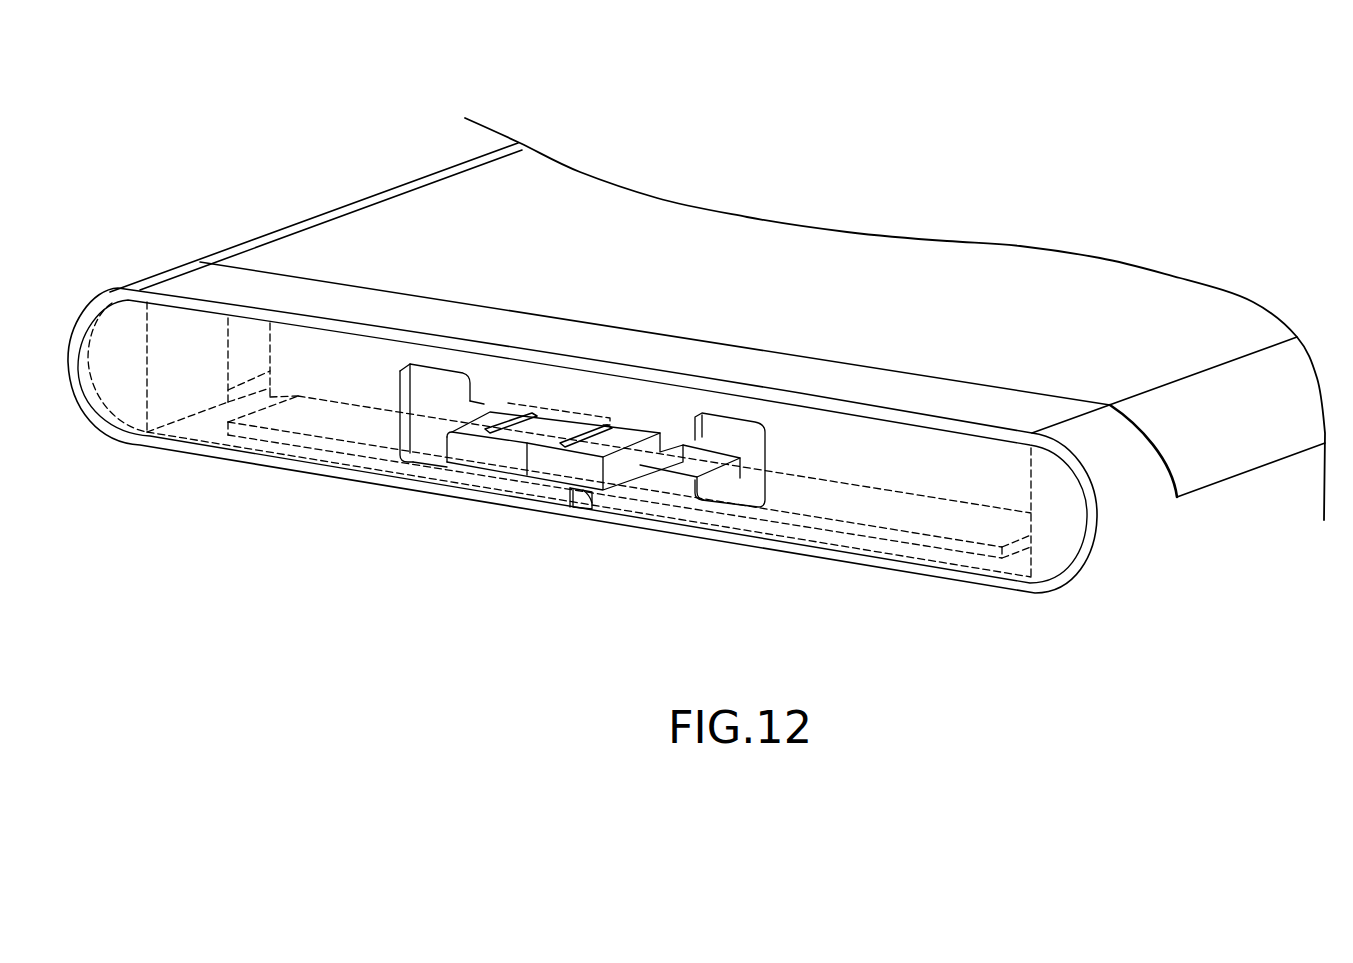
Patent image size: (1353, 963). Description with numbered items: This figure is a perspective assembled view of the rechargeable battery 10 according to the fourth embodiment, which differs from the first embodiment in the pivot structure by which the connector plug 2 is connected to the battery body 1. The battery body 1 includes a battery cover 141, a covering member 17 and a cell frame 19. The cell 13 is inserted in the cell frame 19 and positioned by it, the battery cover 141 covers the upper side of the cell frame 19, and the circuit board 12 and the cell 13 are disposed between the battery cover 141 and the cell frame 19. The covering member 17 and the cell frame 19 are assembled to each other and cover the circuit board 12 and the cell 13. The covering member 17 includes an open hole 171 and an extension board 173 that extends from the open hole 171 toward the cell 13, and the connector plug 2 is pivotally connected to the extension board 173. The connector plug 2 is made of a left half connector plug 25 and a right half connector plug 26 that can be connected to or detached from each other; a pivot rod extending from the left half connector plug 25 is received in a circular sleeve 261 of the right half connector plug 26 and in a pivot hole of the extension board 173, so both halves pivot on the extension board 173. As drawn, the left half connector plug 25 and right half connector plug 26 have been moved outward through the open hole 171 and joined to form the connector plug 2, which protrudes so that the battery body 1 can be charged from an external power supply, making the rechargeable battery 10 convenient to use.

The rechargeable battery 10 is at (707, 63).
The battery body 1 is at (320, 208).
The battery cover 141 is at (423, 213).
The cell frame 19 is at (263, 295).
The cell 13 is at (285, 350).
The circuit board 12 is at (317, 423).
The covering member 17 is at (385, 392).
The open hole 171 is at (400, 427).
The extension board 173 is at (723, 480).
The connector plug 2 is at (571, 513).
The left half connector plug 25 is at (498, 457).
The right half connector plug 26 is at (567, 467).
The circular sleeve 261 is at (582, 503).